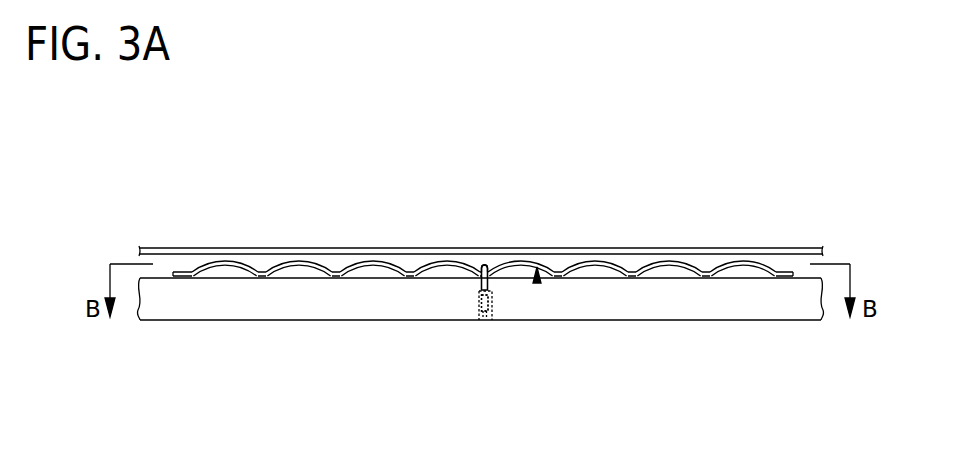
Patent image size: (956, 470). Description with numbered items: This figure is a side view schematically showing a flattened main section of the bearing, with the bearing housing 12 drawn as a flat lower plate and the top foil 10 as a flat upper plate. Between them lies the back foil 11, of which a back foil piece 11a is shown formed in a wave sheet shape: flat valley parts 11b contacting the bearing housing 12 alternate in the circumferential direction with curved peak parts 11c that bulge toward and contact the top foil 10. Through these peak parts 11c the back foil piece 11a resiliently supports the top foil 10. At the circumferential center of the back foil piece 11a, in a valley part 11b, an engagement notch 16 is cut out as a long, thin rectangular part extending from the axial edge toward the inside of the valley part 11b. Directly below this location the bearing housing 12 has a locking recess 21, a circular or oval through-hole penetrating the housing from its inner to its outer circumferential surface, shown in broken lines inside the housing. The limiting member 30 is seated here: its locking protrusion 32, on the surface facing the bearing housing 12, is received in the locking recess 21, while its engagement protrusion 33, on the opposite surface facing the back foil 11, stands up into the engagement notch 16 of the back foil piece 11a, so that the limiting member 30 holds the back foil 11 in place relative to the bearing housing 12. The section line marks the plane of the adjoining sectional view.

The top foil 10 is at (406, 248).
The back foil 11 is at (483, 298).
The back foil piece 11a is at (537, 283).
The valley part 11b is at (632, 272).
The peak part 11c is at (597, 262).
The bearing housing 12 is at (600, 300).
The engagement notch 16 is at (482, 266).
The locking recess 21 is at (490, 320).
The limiting member 30 is at (478, 292).
The locking protrusion 32 is at (473, 320).
The engagement protrusion 33 is at (486, 266).